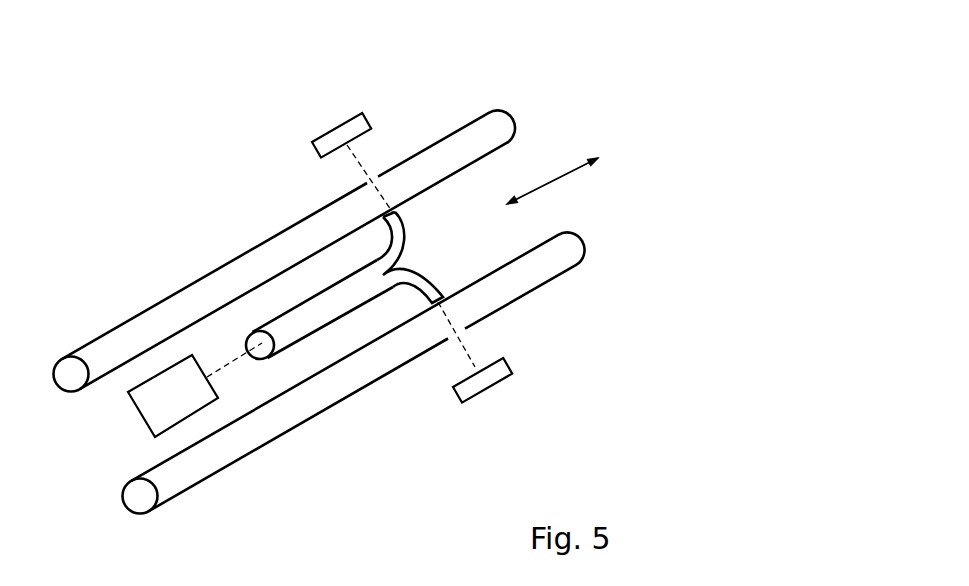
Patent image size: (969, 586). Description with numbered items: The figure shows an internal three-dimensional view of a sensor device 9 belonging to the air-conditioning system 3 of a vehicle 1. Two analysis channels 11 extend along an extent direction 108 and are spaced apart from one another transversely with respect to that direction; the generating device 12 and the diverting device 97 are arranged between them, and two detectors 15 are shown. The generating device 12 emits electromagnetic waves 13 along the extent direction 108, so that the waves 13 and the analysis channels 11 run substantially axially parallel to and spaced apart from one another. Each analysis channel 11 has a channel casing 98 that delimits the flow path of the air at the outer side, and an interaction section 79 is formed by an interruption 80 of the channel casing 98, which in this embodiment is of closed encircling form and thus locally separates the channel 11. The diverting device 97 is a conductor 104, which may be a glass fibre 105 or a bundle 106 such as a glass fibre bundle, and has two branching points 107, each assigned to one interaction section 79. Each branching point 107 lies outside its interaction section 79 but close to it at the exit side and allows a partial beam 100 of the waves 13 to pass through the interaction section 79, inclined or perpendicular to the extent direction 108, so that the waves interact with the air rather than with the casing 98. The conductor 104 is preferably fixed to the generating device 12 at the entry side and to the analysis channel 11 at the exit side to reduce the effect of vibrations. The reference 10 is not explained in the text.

The vehicle 1 is at (403, 282).
The air-conditioning system 3 is at (403, 323).
The sensor device 9 is at (319, 325).
The rod arrangement 10 is at (319, 325).
The analysis channel 11 is at (319, 325).
The generating device 12 is at (187, 408).
The electromagnetic waves 13 is at (230, 360).
The detector 15 is at (337, 128).
The interaction section 79 is at (410, 250).
The interruption 80 is at (385, 272).
The diverting device 97 is at (342, 344).
The channel casing 98 is at (178, 292).
The partial beam 100 is at (352, 152).
The conductor 104 is at (358, 364).
The glass fibre 105 is at (319, 309).
The bundle 106 is at (283, 340).
The branching point 107 is at (404, 232).
The extent direction 108 is at (553, 174).